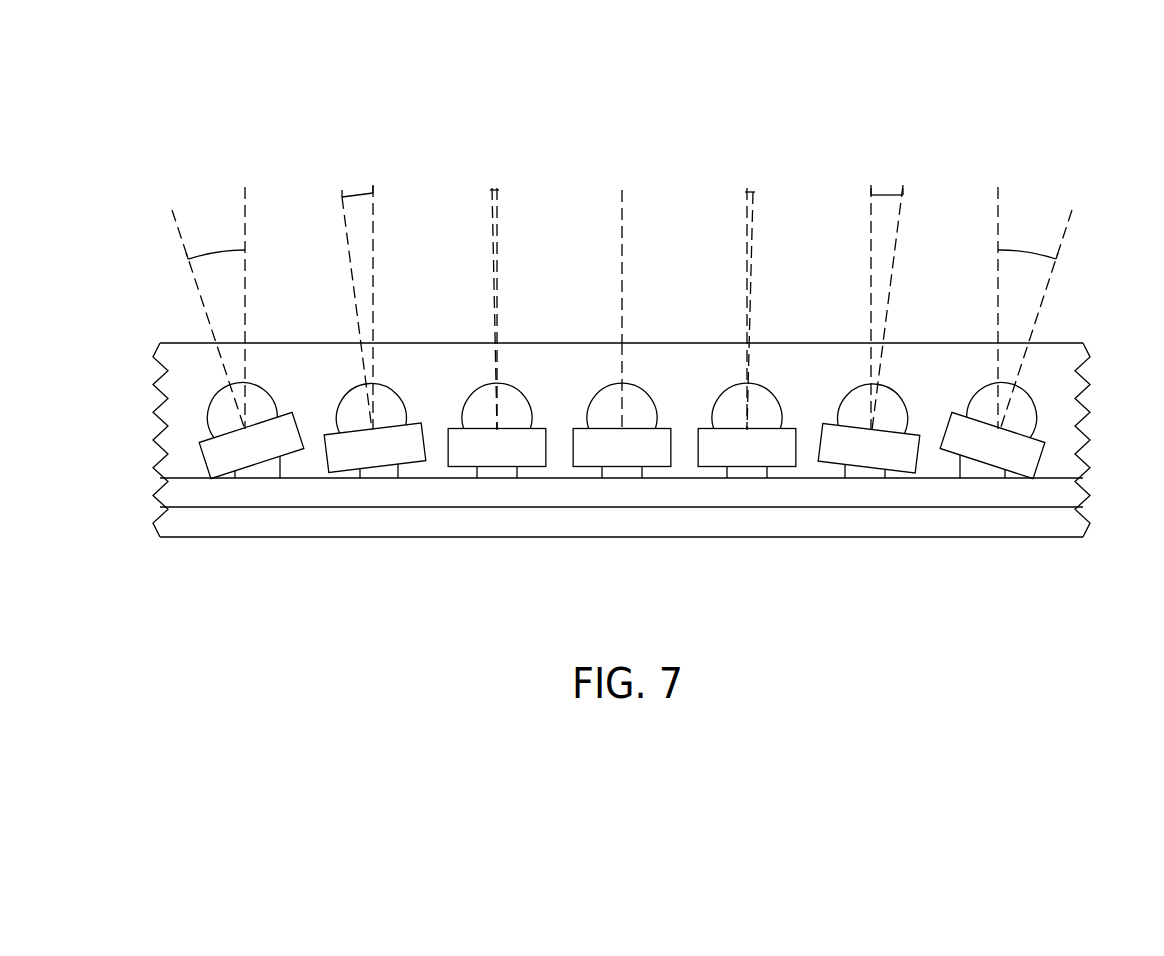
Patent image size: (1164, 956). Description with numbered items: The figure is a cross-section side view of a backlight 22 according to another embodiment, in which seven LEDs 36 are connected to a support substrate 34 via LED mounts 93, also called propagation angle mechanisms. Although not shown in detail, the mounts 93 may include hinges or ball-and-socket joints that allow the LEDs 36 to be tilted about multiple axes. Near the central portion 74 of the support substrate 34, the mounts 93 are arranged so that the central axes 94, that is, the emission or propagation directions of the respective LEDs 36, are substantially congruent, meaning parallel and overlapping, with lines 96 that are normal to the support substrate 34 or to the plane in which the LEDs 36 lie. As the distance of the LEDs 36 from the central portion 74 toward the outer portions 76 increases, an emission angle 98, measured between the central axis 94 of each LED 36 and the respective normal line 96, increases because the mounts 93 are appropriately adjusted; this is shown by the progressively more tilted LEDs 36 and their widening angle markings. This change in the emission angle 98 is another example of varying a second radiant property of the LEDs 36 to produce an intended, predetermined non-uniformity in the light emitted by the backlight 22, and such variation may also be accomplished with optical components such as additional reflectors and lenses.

The backlight 22 is at (591, 309).
The support substrate 34 is at (232, 495).
The LEDs 36 is at (350, 457).
The central portion 74 is at (621, 285).
The outer portions 76 is at (623, 390).
The LED mounts 93 is at (268, 474).
The central axis 94 is at (620, 192).
The lines normal to the support substrate 96 is at (623, 238).
The emission angle 98 is at (217, 250).